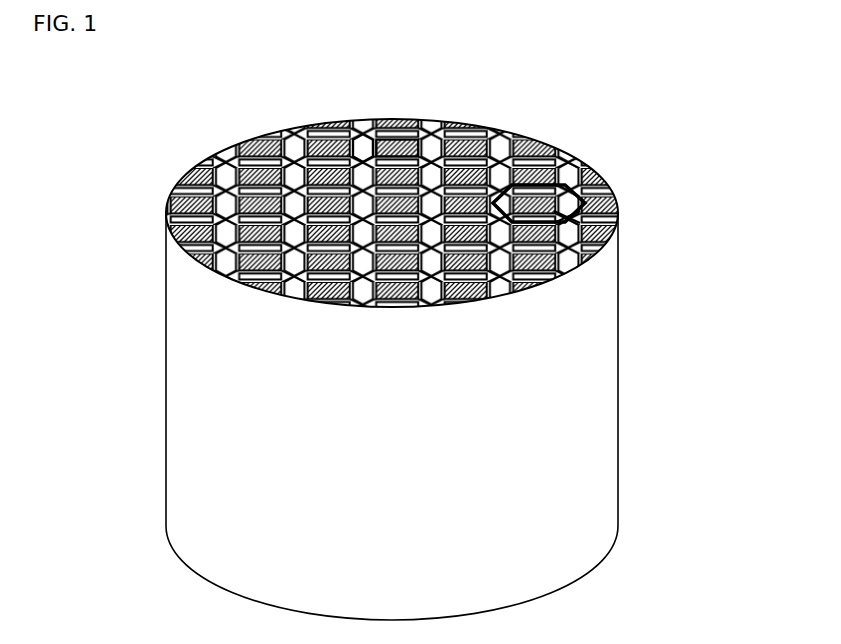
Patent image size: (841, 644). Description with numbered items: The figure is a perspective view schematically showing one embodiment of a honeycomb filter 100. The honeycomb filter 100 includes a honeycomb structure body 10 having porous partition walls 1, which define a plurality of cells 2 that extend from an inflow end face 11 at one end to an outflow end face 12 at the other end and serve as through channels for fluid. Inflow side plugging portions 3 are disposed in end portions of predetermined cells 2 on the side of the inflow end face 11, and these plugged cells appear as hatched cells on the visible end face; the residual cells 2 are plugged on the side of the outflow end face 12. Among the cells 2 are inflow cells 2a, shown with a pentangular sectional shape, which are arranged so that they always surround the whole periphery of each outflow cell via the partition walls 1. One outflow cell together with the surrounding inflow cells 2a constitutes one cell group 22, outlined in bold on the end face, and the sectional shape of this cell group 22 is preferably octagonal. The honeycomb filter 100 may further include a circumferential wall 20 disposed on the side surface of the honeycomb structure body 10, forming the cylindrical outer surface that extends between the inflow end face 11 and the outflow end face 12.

The honeycomb filter 100 is at (663, 73).
The honeycomb structure body 10 is at (626, 300).
The inflow end face 11 is at (220, 153).
The outflow end face 12 is at (585, 575).
The circumferential wall 20 is at (620, 424).
The partition walls 1 is at (565, 172).
The cells 2 is at (362, 142).
The inflow cells 2a is at (363, 148).
The inflow side plugging portions 3 is at (408, 142).
The cell group 22 is at (602, 182).